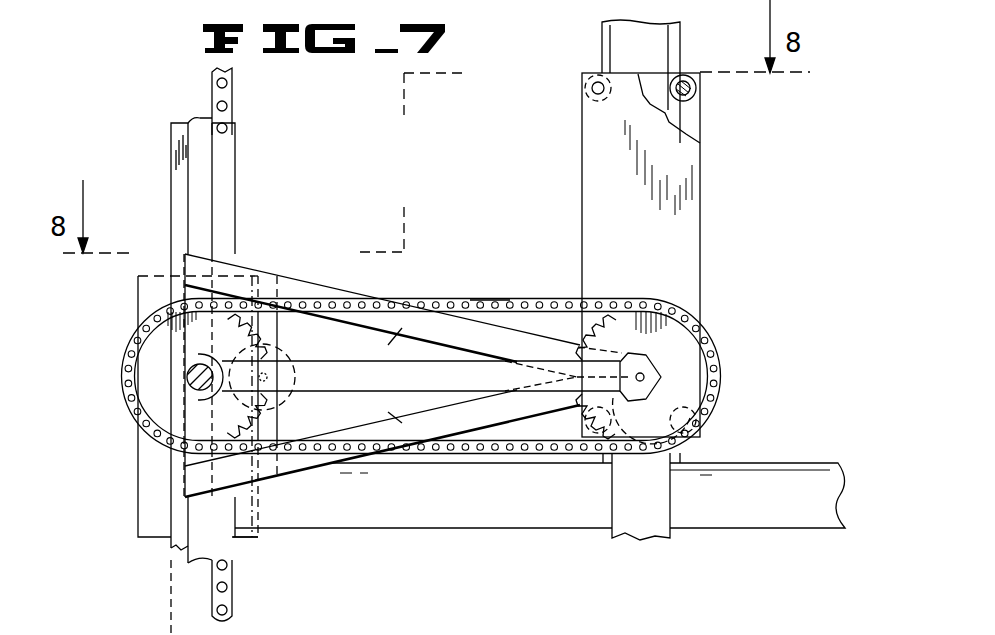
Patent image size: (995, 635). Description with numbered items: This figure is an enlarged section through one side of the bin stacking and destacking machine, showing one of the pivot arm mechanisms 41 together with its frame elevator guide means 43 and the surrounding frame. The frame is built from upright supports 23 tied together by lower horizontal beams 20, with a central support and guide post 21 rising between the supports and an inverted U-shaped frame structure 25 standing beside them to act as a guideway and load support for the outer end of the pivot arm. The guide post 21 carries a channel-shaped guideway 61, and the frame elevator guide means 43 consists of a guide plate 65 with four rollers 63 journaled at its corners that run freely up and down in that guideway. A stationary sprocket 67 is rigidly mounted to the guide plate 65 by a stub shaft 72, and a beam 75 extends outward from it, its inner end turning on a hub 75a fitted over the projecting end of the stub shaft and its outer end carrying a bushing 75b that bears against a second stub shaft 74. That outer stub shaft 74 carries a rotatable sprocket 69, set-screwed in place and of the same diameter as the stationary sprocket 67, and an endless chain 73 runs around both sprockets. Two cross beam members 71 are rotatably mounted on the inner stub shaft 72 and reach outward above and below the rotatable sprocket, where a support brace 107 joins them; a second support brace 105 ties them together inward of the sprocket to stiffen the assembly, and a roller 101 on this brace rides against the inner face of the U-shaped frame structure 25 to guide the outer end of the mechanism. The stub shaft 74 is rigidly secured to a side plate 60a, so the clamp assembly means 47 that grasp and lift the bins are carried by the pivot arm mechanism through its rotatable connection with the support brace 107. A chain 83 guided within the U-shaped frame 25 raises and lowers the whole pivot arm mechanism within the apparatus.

The horizontal beam 20 is at (473, 501).
The central support and guide post 21 is at (646, 506).
The upright support 23 is at (172, 135).
The inverted U-shaped frame structure 25 is at (218, 150).
The pivot arm mechanism 41 is at (352, 283).
The frame elevator guide means 43 is at (712, 213).
The clamp assembly means 47 is at (158, 563).
The side plate 60a is at (138, 316).
The channel-shaped guideway 61 is at (603, 42).
The roller 63 is at (585, 95).
The guide plate 65 is at (630, 214).
The stationary sprocket 67 is at (683, 340).
The rotatable sprocket 69 is at (158, 403).
The cross beam member 71 is at (379, 375).
The stub shaft 72 is at (645, 377).
The endless chain 73 is at (489, 300).
The stub shaft 74 is at (187, 380).
The beam 75 is at (440, 384).
The hub 75a is at (655, 363).
The bushing 75b is at (190, 358).
The chain 83 is at (233, 106).
The roller 101 is at (279, 396).
The second support brace 105 is at (277, 330).
The support brace 107 is at (192, 296).